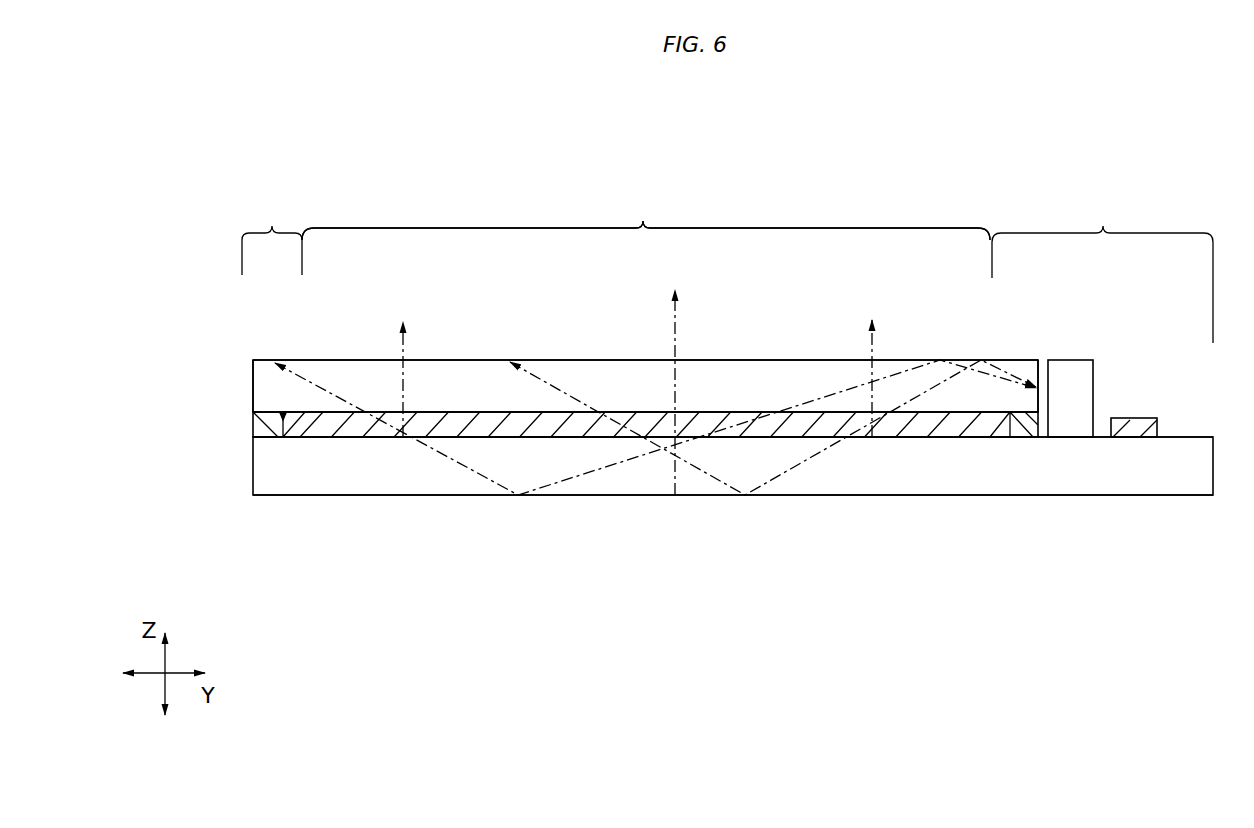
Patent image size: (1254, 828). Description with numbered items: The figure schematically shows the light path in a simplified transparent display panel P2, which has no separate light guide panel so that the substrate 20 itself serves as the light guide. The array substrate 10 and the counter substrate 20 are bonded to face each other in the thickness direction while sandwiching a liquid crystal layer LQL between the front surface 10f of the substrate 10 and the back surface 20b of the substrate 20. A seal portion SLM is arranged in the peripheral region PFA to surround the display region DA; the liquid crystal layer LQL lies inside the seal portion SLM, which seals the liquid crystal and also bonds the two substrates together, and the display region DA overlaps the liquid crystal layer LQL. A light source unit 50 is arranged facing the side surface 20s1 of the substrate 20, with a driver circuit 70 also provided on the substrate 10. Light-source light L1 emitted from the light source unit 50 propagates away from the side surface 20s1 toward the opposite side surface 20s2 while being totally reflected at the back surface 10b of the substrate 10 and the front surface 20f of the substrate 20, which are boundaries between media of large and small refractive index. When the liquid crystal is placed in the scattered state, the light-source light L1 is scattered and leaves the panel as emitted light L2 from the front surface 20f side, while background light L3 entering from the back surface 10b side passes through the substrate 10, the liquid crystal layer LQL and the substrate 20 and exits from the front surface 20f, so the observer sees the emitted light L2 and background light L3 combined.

The display panel P2 is at (465, 200).
The peripheral region PFA is at (727, 270).
The display region DA is at (646, 215).
The substrate 20 is at (273, 389).
The side surface 20s1 is at (1041, 385).
The side surface 20s2 is at (251, 378).
The front surface 20f is at (530, 358).
The back surface 20b is at (515, 416).
The seal portion SLM is at (262, 430).
The substrate 10 is at (280, 465).
The front surface 10f is at (573, 433).
The back surface 10b is at (538, 500).
The liquid crystal layer LQL is at (443, 425).
The light source unit 50 is at (1067, 412).
The driver circuit 70 is at (1136, 428).
The light-source light L1 is at (920, 395).
The emitted light L2 is at (403, 380).
The background light L3 is at (675, 348).